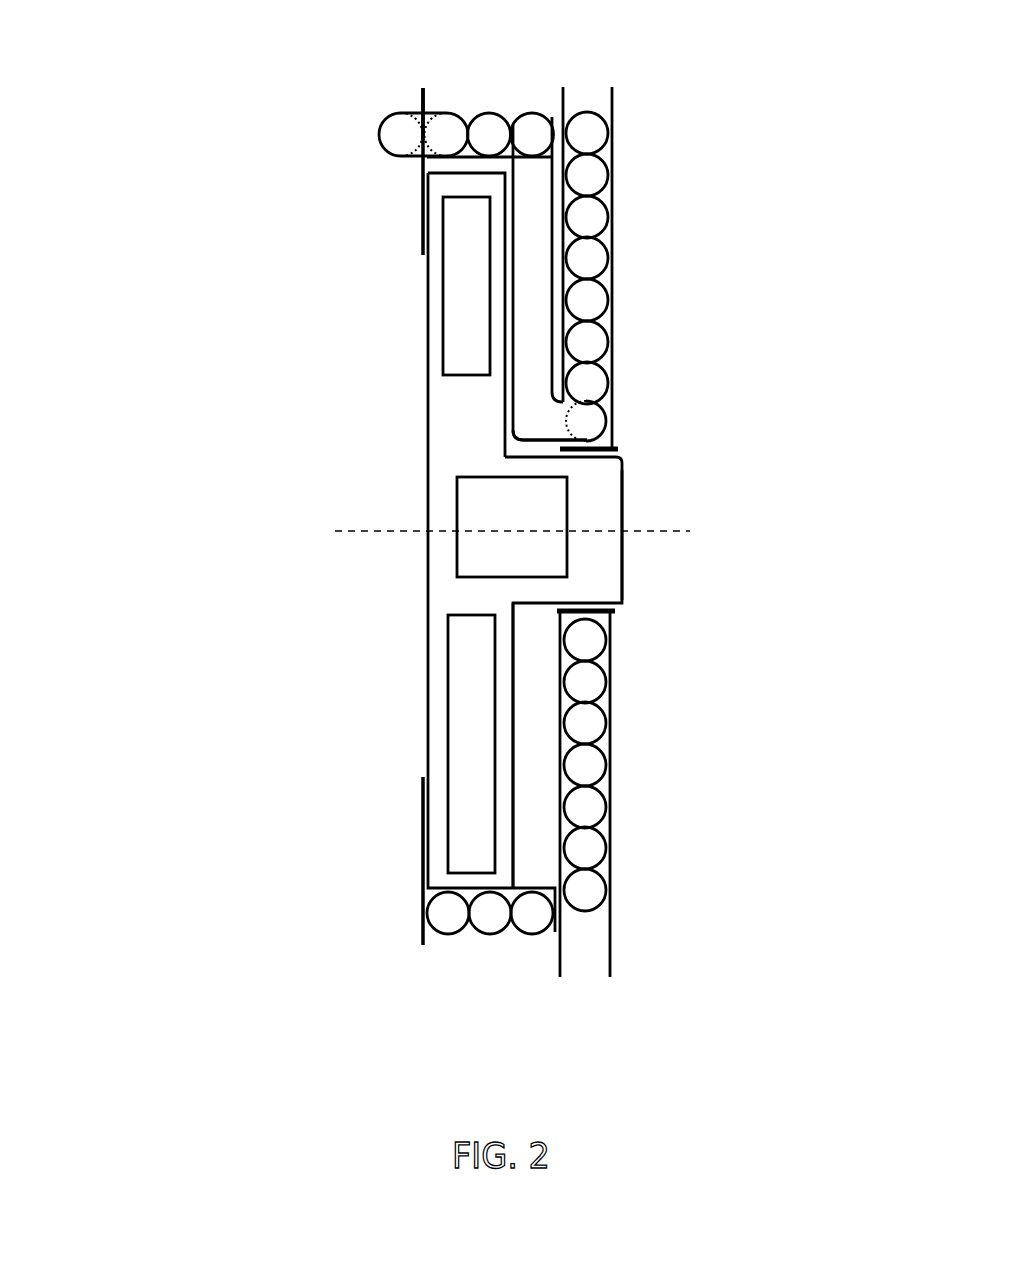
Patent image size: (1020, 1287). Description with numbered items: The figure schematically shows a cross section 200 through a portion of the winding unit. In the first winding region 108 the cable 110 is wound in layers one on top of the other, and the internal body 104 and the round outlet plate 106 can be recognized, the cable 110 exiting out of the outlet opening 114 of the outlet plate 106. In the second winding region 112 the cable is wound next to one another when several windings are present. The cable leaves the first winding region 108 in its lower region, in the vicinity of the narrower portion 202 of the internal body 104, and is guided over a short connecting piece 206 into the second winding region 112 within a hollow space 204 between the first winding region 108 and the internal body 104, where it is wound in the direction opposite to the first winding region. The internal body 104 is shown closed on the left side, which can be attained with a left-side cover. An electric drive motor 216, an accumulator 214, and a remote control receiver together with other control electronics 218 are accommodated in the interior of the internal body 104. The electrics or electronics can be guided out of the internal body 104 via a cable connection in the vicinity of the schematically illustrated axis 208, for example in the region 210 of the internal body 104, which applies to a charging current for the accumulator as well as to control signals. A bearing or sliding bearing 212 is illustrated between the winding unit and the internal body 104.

The cross section 200 is at (155, 340).
The internal body 104 is at (445, 588).
The round outlet plate 106 is at (423, 242).
The first winding region 108 is at (585, 97).
The cable 110 is at (385, 131).
The second winding region 112 is at (477, 96).
The outlet opening 114 is at (408, 103).
The narrower portion 202 is at (584, 503).
The hollow space 204 is at (515, 447).
The connecting piece 206 is at (544, 285).
The axis 208 is at (712, 527).
The region 210 is at (625, 578).
The sliding bearing 212 is at (612, 447).
The accumulator 214 is at (470, 710).
The electric drive motor 216 is at (490, 548).
The control electronics 218 is at (466, 322).